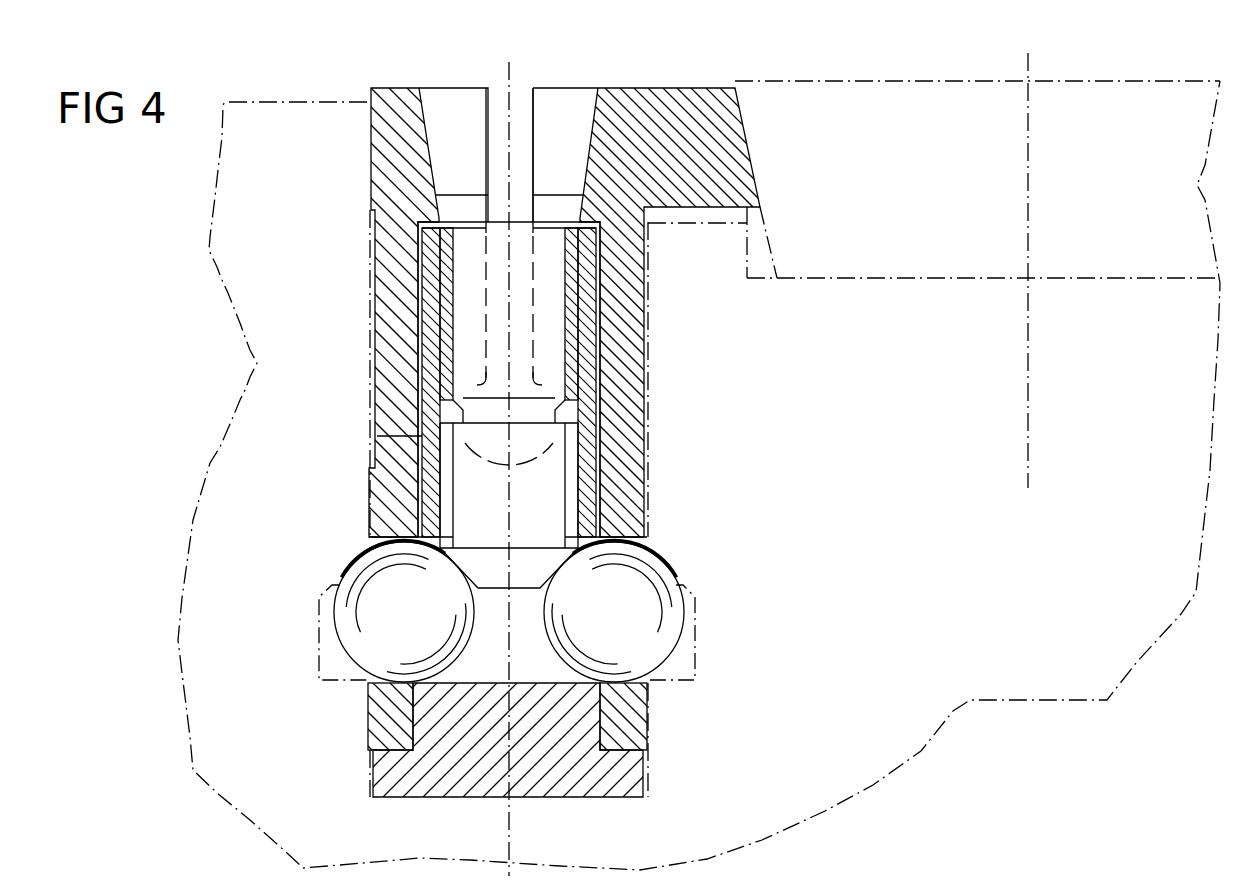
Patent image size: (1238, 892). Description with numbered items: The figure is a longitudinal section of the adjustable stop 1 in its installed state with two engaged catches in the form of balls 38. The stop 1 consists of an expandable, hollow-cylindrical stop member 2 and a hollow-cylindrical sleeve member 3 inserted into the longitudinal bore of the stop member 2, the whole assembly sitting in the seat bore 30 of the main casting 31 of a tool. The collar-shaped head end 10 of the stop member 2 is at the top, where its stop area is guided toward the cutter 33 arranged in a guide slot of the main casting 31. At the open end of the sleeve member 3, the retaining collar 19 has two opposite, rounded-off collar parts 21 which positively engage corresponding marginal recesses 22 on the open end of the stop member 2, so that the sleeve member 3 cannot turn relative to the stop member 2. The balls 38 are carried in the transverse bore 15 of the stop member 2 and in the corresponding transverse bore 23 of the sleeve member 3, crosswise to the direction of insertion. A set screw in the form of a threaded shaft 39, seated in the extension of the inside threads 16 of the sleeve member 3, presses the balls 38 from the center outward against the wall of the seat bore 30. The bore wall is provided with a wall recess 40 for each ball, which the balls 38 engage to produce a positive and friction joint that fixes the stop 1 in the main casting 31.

The adjustable stop 1 is at (654, 86).
The stop member 2 is at (393, 353).
The sleeve member 3 is at (404, 436).
The head end 10 is at (707, 168).
The transverse bore 15 is at (360, 543).
The inside threads 16 is at (605, 358).
The retaining collar 19 is at (478, 776).
The collar parts 21 is at (650, 752).
The marginal recess 22 is at (650, 752).
The transverse bore 23 is at (580, 540).
The seat bore 30 is at (635, 772).
The main casting 31 is at (906, 405).
The cutter 33 is at (868, 213).
The balls 38 is at (362, 638).
The threaded shaft 39 is at (545, 485).
The wall recess 40 is at (320, 640).